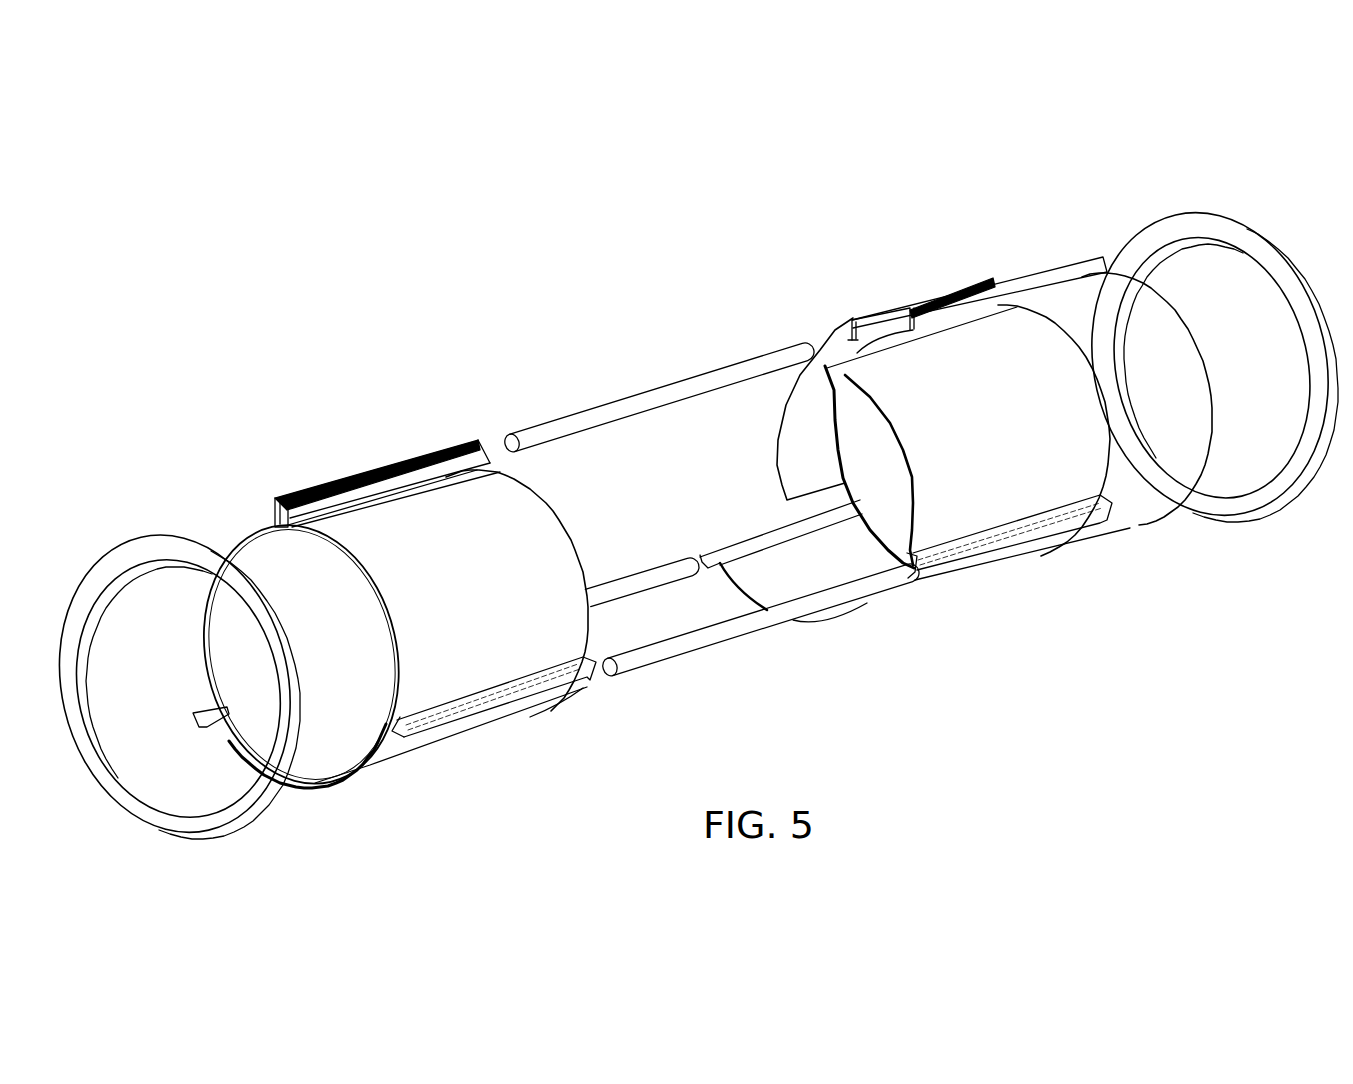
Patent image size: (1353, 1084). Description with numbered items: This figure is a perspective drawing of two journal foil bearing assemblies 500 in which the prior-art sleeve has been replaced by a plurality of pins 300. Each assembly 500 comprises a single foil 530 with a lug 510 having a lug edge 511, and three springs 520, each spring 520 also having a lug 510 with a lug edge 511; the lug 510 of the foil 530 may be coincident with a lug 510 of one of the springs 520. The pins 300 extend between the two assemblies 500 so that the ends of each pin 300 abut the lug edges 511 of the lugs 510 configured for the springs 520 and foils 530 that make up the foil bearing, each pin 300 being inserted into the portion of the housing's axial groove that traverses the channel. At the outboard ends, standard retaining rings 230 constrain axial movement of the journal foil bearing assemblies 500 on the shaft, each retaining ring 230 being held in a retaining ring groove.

The journal foil bearing assembly 500 is at (270, 456).
The retaining ring 230 is at (191, 846).
The pin 300 is at (640, 387).
The lug 510 is at (376, 492).
The lug edge 511 is at (700, 553).
The spring 520 is at (536, 502).
The foil 530 is at (363, 668).